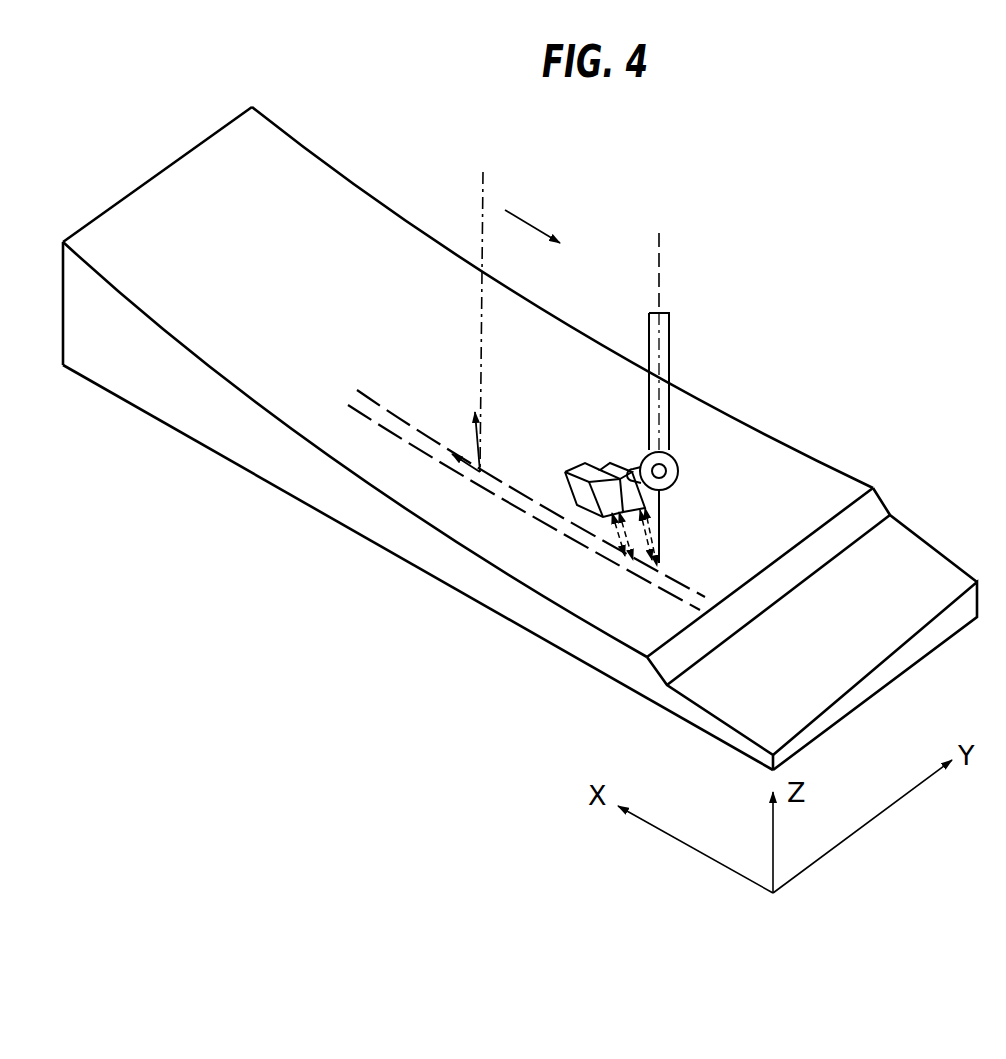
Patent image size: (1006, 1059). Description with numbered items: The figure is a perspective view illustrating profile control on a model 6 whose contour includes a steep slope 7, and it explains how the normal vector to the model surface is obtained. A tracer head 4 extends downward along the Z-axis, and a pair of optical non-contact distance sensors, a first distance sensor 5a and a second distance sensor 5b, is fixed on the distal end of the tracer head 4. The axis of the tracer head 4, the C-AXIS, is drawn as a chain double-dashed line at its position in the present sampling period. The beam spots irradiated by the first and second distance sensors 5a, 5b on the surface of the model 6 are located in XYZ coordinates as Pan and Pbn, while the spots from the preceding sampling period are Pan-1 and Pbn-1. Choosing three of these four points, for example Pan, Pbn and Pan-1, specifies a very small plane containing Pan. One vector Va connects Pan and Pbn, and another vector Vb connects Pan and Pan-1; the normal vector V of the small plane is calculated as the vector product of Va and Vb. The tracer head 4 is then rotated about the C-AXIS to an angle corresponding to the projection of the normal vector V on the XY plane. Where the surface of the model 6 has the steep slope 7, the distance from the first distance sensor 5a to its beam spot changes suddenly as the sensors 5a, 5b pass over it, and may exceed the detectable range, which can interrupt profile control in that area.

The tracer head 4 is at (686, 342).
The first distance sensor 5a is at (608, 465).
The second distance sensor 5b is at (582, 498).
The model 6 is at (238, 433).
The steep slope 7 is at (863, 512).
The beam spot position of first distance sensor Pan is at (482, 472).
The beam spot position of second distance sensor Pbn is at (470, 482).
The preceding beam spot position of first distance sensor Pan-1 is at (450, 452).
The preceding beam spot position of second distance sensor Pbn-1 is at (440, 460).
The normal vector V is at (482, 428).
The vector connecting Pan and Pbn Va is at (483, 474).
The vector connecting Pan and Pan-1 Vb is at (466, 462).
The axis of the tracer head C-AXIS is at (495, 190).